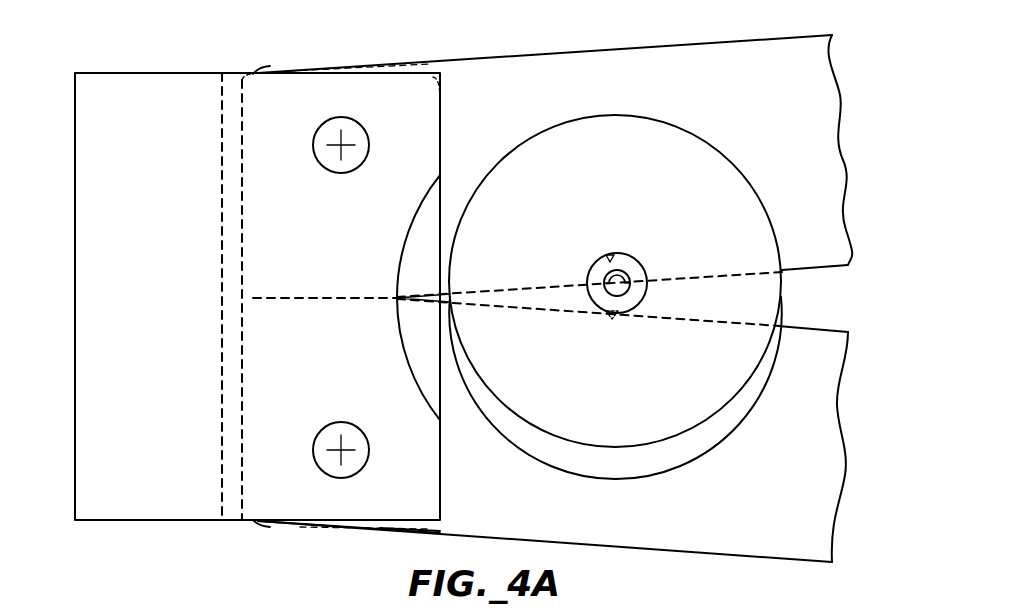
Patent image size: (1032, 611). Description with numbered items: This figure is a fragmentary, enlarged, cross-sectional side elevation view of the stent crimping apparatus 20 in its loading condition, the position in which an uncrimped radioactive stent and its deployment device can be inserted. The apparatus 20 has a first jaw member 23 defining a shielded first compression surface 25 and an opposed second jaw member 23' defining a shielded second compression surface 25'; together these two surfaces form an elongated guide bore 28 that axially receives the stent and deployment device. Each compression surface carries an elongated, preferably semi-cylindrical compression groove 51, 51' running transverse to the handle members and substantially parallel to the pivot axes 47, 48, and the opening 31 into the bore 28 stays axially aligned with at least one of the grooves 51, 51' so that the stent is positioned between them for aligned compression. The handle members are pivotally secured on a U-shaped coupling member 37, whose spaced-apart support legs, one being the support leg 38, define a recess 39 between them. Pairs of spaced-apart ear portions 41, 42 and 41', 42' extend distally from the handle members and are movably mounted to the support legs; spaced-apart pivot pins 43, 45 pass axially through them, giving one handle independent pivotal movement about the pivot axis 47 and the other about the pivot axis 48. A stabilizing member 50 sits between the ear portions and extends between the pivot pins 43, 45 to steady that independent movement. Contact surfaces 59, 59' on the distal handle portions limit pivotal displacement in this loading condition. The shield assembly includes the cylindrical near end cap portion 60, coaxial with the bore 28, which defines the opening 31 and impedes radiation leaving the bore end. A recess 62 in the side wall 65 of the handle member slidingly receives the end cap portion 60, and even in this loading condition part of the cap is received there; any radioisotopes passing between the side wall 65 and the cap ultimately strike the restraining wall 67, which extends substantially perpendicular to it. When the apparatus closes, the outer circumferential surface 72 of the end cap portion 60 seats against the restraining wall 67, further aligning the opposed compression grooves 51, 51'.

The stent crimping apparatus 20 is at (845, 55).
The first jaw member 23 is at (553, 139).
The second jaw member 23' is at (545, 554).
The first compression surface 25 is at (589, 289).
The second compression surface 25' is at (588, 329).
The guide bore 28 is at (620, 300).
The opening 31 is at (628, 262).
The coupling member 37 is at (137, 73).
The support leg 38 is at (385, 530).
The recess 39 is at (226, 70).
The ear portion 41 is at (346, 68).
The ear portion 42 is at (360, 67).
The ear portion 41' is at (326, 560).
The ear portion 42' is at (365, 528).
The pivot pin 43 is at (335, 172).
The pivot pin 45 is at (353, 433).
The pivot axis 47 is at (348, 140).
The pivot axis 48 is at (333, 455).
The stabilizing member 50 is at (260, 525).
The compression groove 51 is at (584, 238).
The compression groove 51' is at (586, 341).
The contact surface 59 is at (325, 315).
The contact surface 59' is at (379, 283).
The near end cap portion 60 is at (615, 115).
The recess 62 is at (778, 345).
The side wall 65 is at (610, 463).
The restraining wall 67 is at (647, 472).
The outer circumferential surface 72 is at (687, 433).